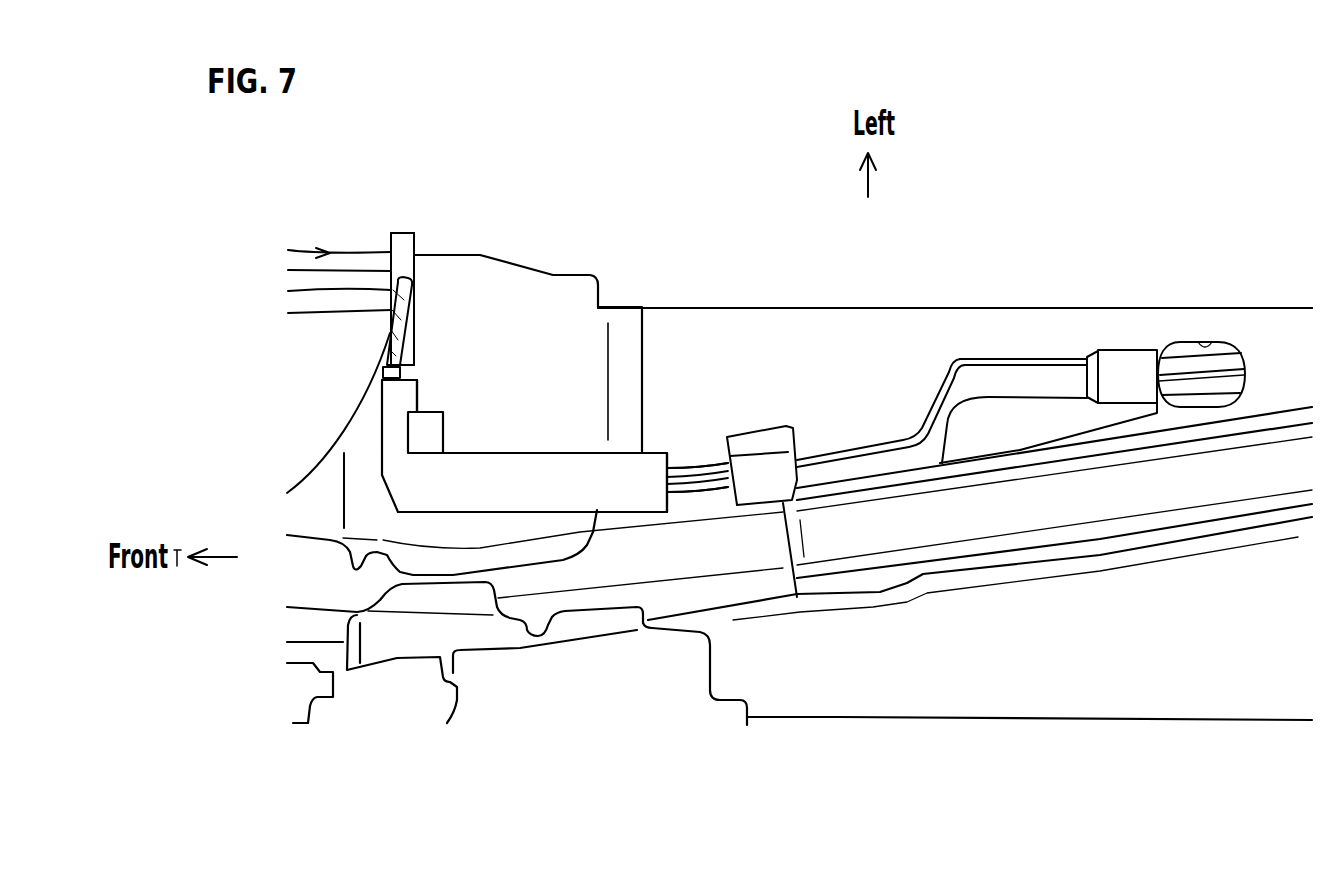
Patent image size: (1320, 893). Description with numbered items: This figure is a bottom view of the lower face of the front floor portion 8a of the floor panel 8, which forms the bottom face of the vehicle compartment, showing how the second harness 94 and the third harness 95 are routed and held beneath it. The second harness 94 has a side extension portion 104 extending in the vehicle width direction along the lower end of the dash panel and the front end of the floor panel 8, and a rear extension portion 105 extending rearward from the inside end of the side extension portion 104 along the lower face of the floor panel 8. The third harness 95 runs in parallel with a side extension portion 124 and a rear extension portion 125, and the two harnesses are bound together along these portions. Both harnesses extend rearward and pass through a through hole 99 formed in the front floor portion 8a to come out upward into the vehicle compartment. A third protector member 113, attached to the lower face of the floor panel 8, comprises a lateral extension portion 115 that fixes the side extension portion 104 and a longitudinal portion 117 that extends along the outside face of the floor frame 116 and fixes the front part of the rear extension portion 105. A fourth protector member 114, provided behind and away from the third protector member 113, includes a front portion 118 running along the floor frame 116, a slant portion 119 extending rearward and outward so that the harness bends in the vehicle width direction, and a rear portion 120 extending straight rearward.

The floor panel 8 is at (955, 277).
The front floor portion 8a is at (853, 330).
The second harness 94 is at (700, 354).
The third harness 95 is at (752, 343).
The through hole 99 is at (1205, 347).
The side extension portion 104 is at (390, 330).
The rear extension portion 105 is at (687, 473).
The third protector member 113 is at (362, 454).
The fourth protector member 114 is at (987, 340).
The lateral extension portion 115 is at (405, 395).
The floor frame 116 is at (1037, 507).
The longitudinal portion 117 is at (547, 470).
The front portion 118 is at (842, 465).
The slant portion 119 is at (947, 408).
The rear portion 120 is at (1053, 375).
The side extension portion 124 is at (329, 316).
The rear extension portion 125 is at (707, 497).